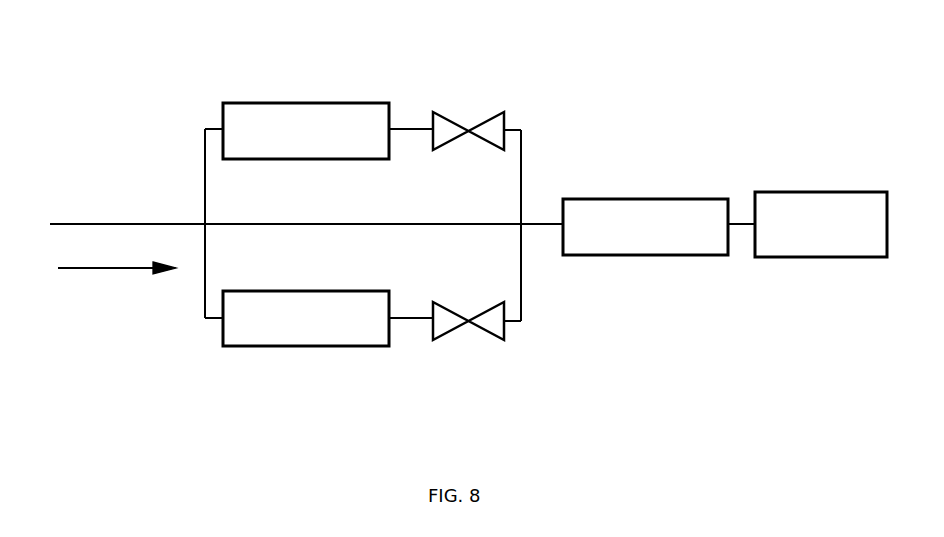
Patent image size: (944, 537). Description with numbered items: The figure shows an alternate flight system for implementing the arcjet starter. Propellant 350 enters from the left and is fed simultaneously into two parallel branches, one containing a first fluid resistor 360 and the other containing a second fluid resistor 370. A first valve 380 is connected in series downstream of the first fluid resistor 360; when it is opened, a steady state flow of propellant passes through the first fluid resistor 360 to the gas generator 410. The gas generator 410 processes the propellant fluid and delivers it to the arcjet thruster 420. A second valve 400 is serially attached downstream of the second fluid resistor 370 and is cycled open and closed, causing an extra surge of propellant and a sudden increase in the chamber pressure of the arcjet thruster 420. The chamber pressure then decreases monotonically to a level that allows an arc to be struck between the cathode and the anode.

The propellant 350 is at (128, 268).
The first fluid resistor 360 is at (320, 103).
The second fluid resistor 370 is at (322, 346).
The first valve 380 is at (448, 117).
The second valve 400 is at (455, 326).
The gas generator 410 is at (660, 199).
The arcjet thruster 420 is at (825, 192).